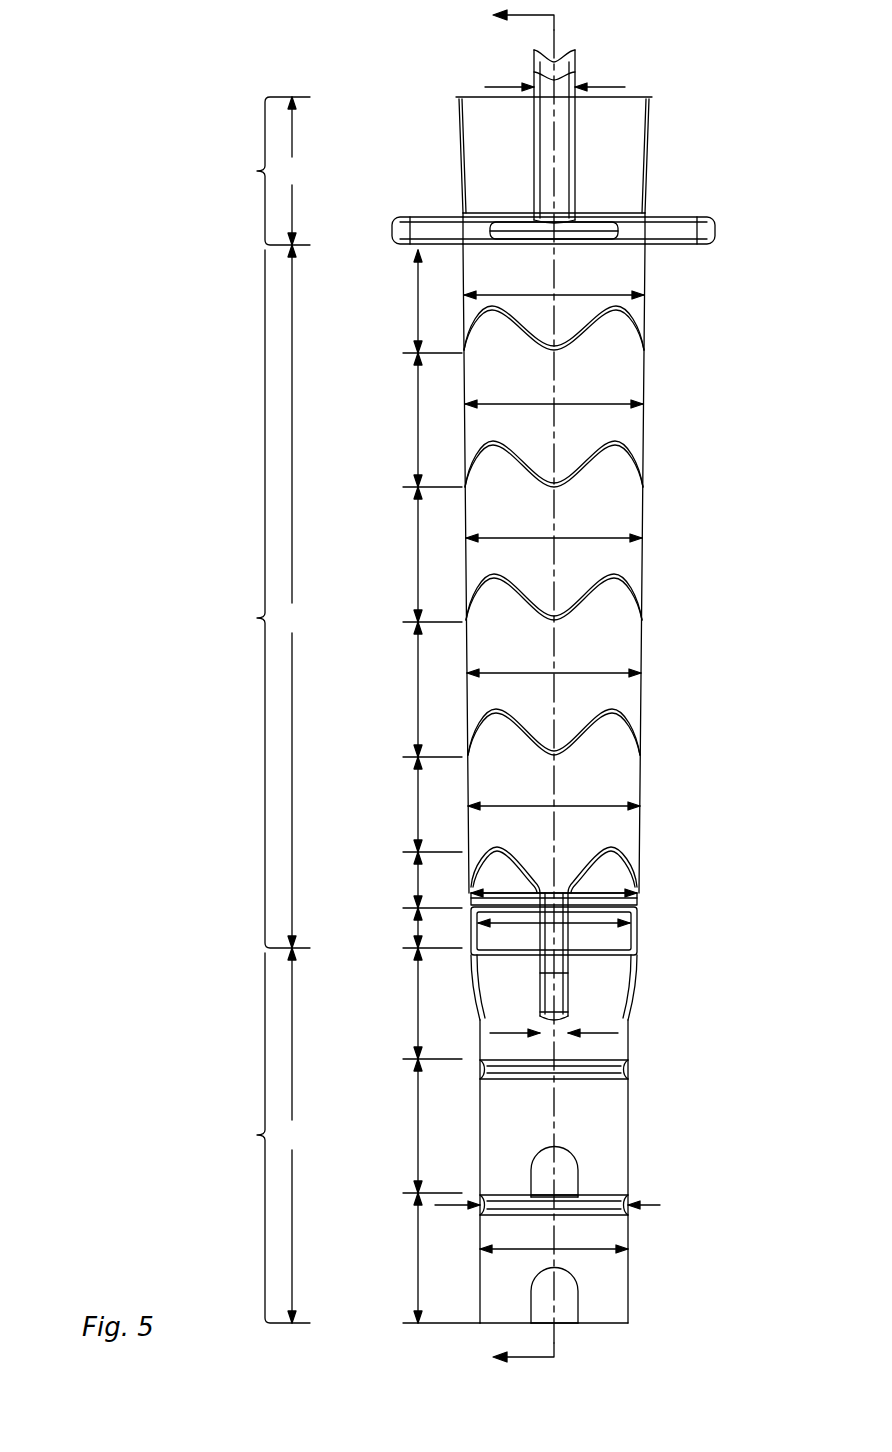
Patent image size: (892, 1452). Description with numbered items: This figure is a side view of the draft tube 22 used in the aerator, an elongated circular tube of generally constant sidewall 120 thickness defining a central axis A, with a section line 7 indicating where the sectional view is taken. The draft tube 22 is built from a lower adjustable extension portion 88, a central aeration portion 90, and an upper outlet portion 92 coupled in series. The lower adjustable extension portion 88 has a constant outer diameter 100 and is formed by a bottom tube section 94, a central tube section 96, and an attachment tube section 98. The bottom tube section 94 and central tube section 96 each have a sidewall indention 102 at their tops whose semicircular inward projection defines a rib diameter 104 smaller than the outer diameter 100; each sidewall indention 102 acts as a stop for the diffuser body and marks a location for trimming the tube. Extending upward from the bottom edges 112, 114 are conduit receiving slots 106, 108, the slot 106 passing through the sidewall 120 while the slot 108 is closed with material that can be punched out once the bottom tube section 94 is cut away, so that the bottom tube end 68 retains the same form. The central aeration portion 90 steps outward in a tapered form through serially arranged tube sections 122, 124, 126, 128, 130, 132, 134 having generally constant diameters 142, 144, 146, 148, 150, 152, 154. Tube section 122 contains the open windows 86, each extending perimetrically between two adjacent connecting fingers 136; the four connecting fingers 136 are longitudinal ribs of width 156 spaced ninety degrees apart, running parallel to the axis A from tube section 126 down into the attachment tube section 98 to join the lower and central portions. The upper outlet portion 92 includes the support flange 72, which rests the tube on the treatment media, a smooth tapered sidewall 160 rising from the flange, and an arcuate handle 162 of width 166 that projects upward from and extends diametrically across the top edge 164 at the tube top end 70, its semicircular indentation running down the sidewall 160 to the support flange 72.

The section line 7- 7 is at (504, 692).
The central axis A is at (566, 45).
The draft tube 22 is at (340, 52).
The bottom tube end 68 is at (640, 1335).
The tube top end 70 is at (665, 70).
The support flange 72 is at (712, 220).
The open window 86 is at (515, 958).
The lower adjustable extension portion 88 is at (268, 1135).
The central aeration portion 90 is at (269, 596).
The upper outlet portion 92 is at (269, 171).
The bottom tube section 94 is at (418, 1260).
The central tube section 96 is at (418, 1133).
The attachment tube section 98 is at (418, 1007).
The outer diameter 100 is at (592, 1250).
The sidewall indention 102 is at (647, 1063).
The rib diameter 104 is at (660, 1210).
The conduit receiving slot 106 is at (580, 1305).
The conduit receiving slot 108 is at (580, 1150).
The bottom edge 112 is at (588, 1325).
The bottom edge 114 is at (595, 1194).
The sidewall 120 is at (625, 428).
The tube section 122 is at (418, 922).
The tube section 124 is at (418, 876).
The tube section 126 is at (418, 802).
The tube section 128 is at (418, 687).
The tube section 130 is at (418, 552).
The tube section 132 is at (418, 418).
The tube section 134 is at (418, 297).
The connecting finger 136 is at (478, 1003).
The diameter 142 is at (598, 922).
The diameter 144 is at (594, 893).
The diameter 146 is at (592, 806).
The diameter 148 is at (598, 673).
The diameter 150 is at (598, 538).
The diameter 152 is at (598, 404).
The diameter 154 is at (590, 293).
The longitudinal width 156 is at (550, 1030).
The tapered sidewall 160 is at (650, 150).
The arcuate handle 162 is at (578, 56).
The top edge 164 is at (650, 97).
The handle width 166 is at (495, 84).